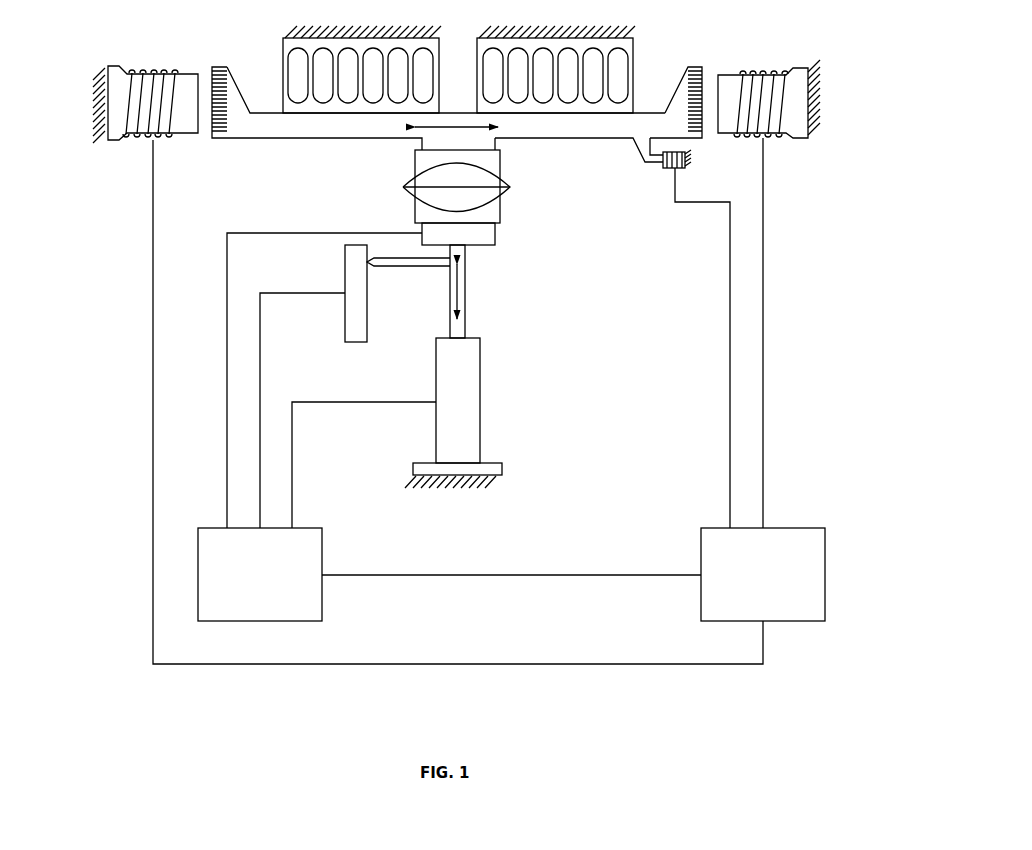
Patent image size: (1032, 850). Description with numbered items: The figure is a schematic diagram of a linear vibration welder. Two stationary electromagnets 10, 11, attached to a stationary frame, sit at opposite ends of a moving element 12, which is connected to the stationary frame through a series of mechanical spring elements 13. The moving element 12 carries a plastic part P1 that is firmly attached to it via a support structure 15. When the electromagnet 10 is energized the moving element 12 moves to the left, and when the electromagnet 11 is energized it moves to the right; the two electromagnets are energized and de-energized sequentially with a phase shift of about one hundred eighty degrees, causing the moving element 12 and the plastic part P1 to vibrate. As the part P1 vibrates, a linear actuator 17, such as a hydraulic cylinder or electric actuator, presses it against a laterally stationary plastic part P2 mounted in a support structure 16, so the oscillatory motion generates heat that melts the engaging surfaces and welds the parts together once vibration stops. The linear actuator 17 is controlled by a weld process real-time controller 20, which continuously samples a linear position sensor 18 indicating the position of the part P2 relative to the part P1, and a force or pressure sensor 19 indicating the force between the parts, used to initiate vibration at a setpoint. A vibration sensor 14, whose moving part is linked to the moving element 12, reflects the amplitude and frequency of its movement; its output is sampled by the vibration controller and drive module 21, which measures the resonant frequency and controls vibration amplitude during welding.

The stationary electromagnet 10 is at (107, 65).
The stationary electromagnet 11 is at (804, 62).
The moving element 12 is at (267, 112).
The mechanical spring elements 13 is at (636, 71).
The vibration sensor 14 is at (662, 171).
The support structure 15 is at (412, 166).
The support structure 16 is at (412, 209).
The linear actuator 17 is at (481, 406).
The linear position sensor 18 is at (371, 296).
The force or pressure sensor 19 is at (497, 239).
The weld process real-time controller 20 is at (324, 604).
The vibration controller and drive module 21 is at (827, 604).
The plastic part P1 is at (511, 176).
The plastic part P2 is at (511, 198).